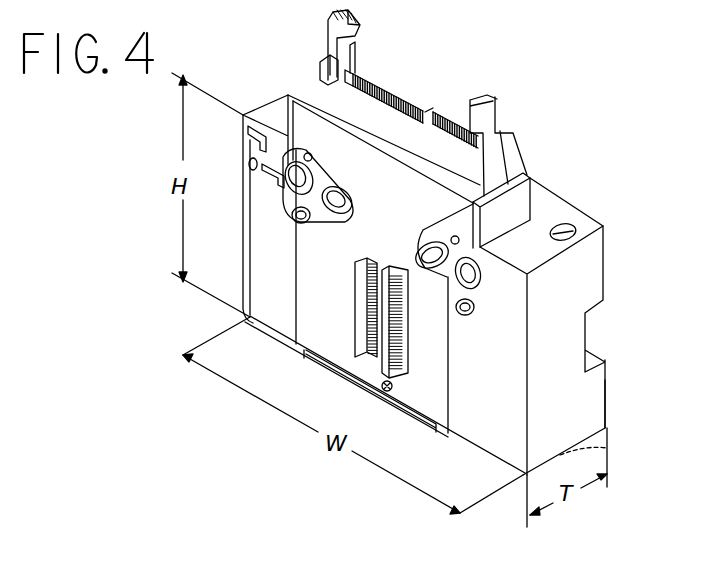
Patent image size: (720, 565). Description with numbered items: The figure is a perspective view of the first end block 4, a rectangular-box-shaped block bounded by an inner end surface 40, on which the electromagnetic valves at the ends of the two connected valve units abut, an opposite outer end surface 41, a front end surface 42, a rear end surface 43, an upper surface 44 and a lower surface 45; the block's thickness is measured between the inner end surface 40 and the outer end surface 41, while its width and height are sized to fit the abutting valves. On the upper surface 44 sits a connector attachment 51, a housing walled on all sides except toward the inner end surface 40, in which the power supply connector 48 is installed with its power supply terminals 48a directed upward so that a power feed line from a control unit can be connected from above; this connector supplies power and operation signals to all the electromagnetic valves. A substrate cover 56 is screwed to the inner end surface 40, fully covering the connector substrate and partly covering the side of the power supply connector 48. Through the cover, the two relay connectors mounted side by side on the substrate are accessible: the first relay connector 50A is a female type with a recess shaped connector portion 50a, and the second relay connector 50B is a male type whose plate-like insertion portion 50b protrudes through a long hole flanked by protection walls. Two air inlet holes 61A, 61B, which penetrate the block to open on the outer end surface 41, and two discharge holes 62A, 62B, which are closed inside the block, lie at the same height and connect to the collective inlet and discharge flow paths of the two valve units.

The first end block 4 is at (601, 207).
The inner end surface 40 is at (502, 450).
The outer end surface 41 is at (607, 397).
The front end surface 42 is at (596, 267).
The rear end surface 43 is at (237, 187).
The upper surface 44 is at (556, 213).
The lower surface 45 is at (607, 448).
The power supply connector 48 is at (393, 82).
The power supply terminals 48a is at (457, 110).
The first relay connector 50A is at (407, 340).
The second relay connector 50B is at (370, 366).
The recess shaped connector portion 50a is at (389, 392).
The plate-like insertion portion 50b is at (367, 313).
The connector attachment 51 is at (521, 206).
The substrate cover 56 is at (306, 124).
The air inlet hole 61A is at (417, 260).
The air inlet hole 61B is at (319, 215).
The discharge hole 62A is at (473, 293).
The discharge hole 62B is at (288, 190).